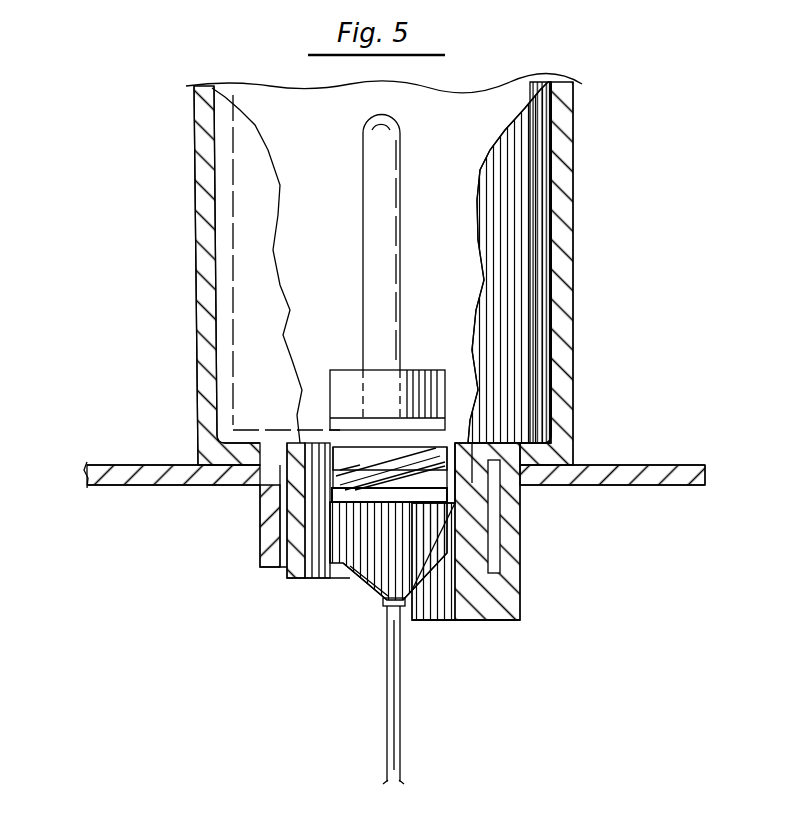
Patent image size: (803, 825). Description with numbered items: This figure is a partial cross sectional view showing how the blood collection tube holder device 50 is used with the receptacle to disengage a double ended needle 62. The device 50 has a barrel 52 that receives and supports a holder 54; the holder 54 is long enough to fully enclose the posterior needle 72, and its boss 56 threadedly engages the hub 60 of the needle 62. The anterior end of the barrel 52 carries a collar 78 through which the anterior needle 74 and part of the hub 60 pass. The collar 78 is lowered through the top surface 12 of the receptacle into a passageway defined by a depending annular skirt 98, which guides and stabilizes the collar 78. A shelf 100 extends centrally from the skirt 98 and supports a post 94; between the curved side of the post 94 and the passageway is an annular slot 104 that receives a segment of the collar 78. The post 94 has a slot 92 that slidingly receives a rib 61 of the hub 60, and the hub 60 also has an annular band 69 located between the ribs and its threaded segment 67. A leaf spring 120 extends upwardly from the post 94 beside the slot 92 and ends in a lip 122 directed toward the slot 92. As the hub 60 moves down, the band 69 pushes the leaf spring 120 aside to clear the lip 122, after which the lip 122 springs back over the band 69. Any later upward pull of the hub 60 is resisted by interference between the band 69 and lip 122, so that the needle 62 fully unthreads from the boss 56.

The top surface 12 is at (140, 463).
The blood collection tube holder device 50 is at (168, 180).
The barrel 52 is at (197, 266).
The holder 54 is at (283, 188).
The boss 56 is at (358, 380).
The hub 60 is at (366, 590).
The rib 61 is at (420, 620).
The double ended needle 62 is at (406, 695).
The threaded segment 67 is at (357, 470).
The annular band 69 is at (330, 578).
The posterior needle 72 is at (400, 167).
The anterior needle 74 is at (400, 735).
The collar 78 is at (293, 578).
The slot 92 is at (499, 569).
The post 94 is at (505, 612).
The annular skirt 98 is at (262, 541).
The shelf 100 is at (487, 615).
The annular slot 104 is at (496, 551).
The leaf spring 120 is at (460, 488).
The lip 122 is at (463, 440).